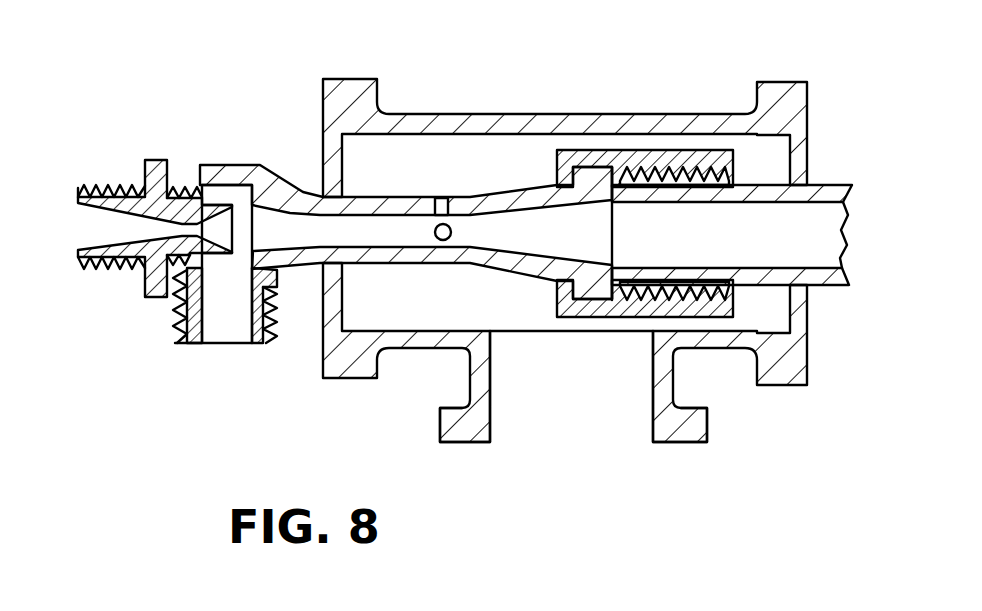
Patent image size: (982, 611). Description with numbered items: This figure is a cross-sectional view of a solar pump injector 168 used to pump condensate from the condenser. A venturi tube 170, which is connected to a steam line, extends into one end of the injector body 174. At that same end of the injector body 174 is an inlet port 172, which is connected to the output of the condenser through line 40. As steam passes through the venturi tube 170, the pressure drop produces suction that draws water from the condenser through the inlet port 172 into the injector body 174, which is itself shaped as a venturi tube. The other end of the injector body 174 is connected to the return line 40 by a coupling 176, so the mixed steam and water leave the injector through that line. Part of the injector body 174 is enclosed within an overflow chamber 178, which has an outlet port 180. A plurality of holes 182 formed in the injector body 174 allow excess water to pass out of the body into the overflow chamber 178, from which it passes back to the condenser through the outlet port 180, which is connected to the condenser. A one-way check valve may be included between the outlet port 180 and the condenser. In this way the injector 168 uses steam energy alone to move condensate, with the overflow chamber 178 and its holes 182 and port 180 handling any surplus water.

The injector 168 is at (243, 98).
The venturi tube 170 is at (131, 236).
The inlet port 172 is at (233, 326).
The injector body 174 is at (303, 191).
The coupling 176 is at (633, 318).
The overflow chamber 178 is at (540, 116).
The outlet port 180 is at (583, 418).
The holes 182 is at (437, 241).
The return line 40 is at (822, 183).